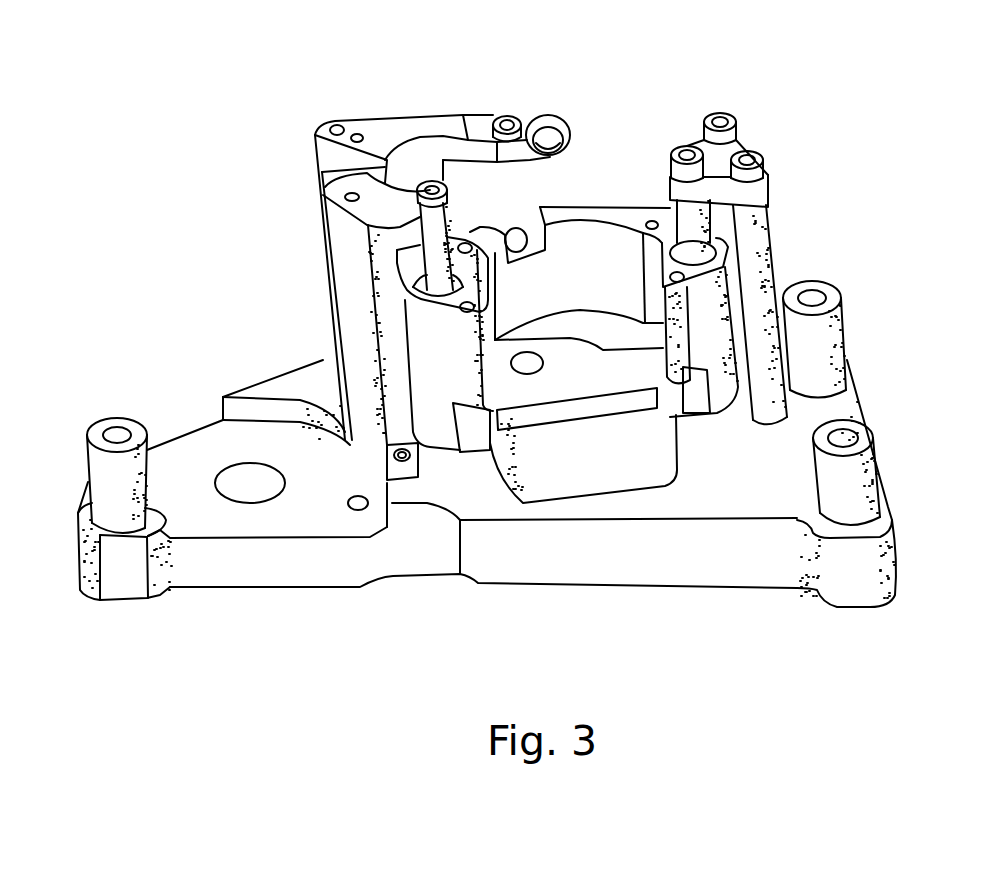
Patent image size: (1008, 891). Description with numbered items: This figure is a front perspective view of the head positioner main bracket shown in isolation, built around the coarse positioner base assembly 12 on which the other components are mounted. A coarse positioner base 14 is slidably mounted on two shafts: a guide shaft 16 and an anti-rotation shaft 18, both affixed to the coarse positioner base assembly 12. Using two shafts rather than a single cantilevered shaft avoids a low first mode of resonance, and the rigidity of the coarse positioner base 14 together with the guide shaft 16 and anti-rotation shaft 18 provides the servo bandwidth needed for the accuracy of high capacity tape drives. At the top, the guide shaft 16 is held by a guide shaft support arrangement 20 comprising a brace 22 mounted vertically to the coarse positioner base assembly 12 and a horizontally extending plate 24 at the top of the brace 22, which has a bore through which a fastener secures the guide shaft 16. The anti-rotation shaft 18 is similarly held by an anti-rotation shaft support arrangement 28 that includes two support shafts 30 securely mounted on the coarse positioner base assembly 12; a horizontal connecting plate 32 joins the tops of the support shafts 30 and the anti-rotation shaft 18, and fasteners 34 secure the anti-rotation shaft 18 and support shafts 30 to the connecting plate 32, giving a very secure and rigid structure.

The coarse positioner base assembly 12 is at (300, 571).
The coarse positioner base 14 is at (580, 215).
The guide shaft 16 is at (447, 245).
The anti-rotation shaft 18 is at (688, 227).
The guide shaft support arrangement 20 is at (286, 278).
The brace 22 is at (333, 230).
The horizontally extending plate 24 is at (390, 122).
The anti-rotation shaft support arrangement 28 is at (810, 156).
The support shafts 30 is at (772, 237).
The horizontal connecting plate 32 is at (742, 143).
The fasteners 34 is at (724, 113).